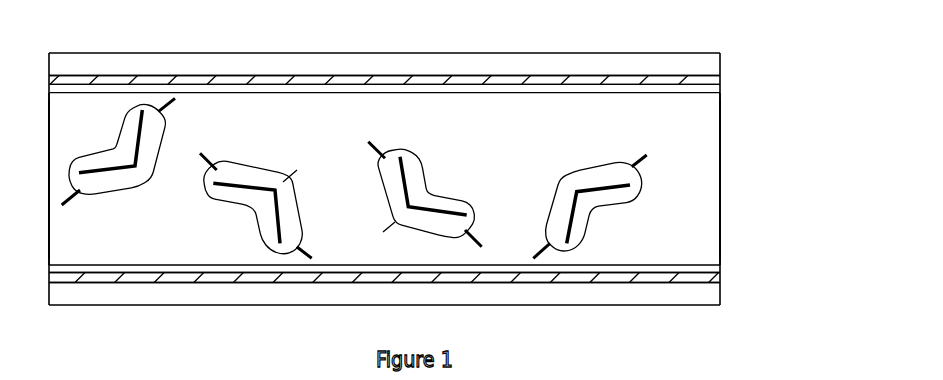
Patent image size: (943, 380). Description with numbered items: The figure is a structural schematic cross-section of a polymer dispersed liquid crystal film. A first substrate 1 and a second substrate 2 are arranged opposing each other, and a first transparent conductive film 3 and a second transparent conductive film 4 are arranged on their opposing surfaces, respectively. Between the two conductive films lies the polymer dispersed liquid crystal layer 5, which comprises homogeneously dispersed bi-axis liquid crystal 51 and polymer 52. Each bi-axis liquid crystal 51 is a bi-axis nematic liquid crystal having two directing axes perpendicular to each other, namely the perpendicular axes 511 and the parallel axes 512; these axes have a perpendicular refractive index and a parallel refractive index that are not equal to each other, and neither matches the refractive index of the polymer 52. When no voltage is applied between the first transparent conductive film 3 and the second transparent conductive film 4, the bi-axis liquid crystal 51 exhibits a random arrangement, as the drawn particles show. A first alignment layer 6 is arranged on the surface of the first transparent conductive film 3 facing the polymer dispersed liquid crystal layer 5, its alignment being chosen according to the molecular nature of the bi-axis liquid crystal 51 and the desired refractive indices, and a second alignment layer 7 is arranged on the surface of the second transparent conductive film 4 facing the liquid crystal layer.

The first substrate 1 is at (713, 63).
The second substrate 2 is at (716, 293).
The first transparent conductive film 3 is at (716, 82).
The second transparent conductive film 4 is at (716, 278).
The polymer dispersed liquid crystal layer 5 is at (47, 93).
The first alignment layer 6 is at (715, 88).
The second alignment layer 7 is at (716, 267).
The bi-axis liquid crystal 51 is at (617, 193).
The polymer 52 is at (712, 134).
The perpendicular axes 511 is at (637, 157).
The parallel axes 512 is at (393, 222).